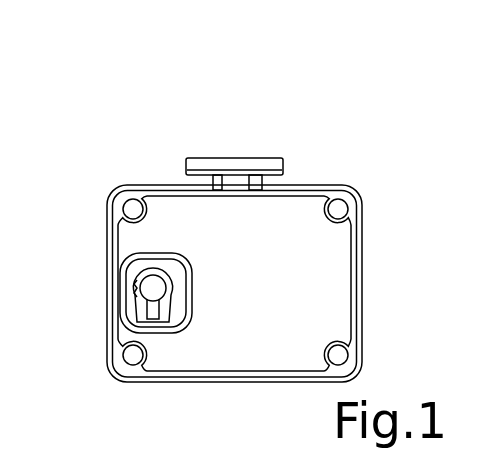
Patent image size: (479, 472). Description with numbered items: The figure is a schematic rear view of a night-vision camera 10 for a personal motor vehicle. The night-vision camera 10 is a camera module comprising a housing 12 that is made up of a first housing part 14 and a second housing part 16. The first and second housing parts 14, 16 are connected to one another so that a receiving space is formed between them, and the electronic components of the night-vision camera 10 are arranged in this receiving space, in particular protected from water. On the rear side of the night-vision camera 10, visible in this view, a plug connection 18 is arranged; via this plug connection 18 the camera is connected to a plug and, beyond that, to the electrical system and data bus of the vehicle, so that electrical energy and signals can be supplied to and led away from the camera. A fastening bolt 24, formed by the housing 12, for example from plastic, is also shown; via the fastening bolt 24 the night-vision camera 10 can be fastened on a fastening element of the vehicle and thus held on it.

The night-vision camera 10 is at (258, 426).
The housing 12 is at (346, 151).
The first housing part 14 is at (363, 232).
The second housing part 16 is at (332, 295).
The plug connection 18 is at (102, 267).
The fastening bolt 24 is at (238, 158).